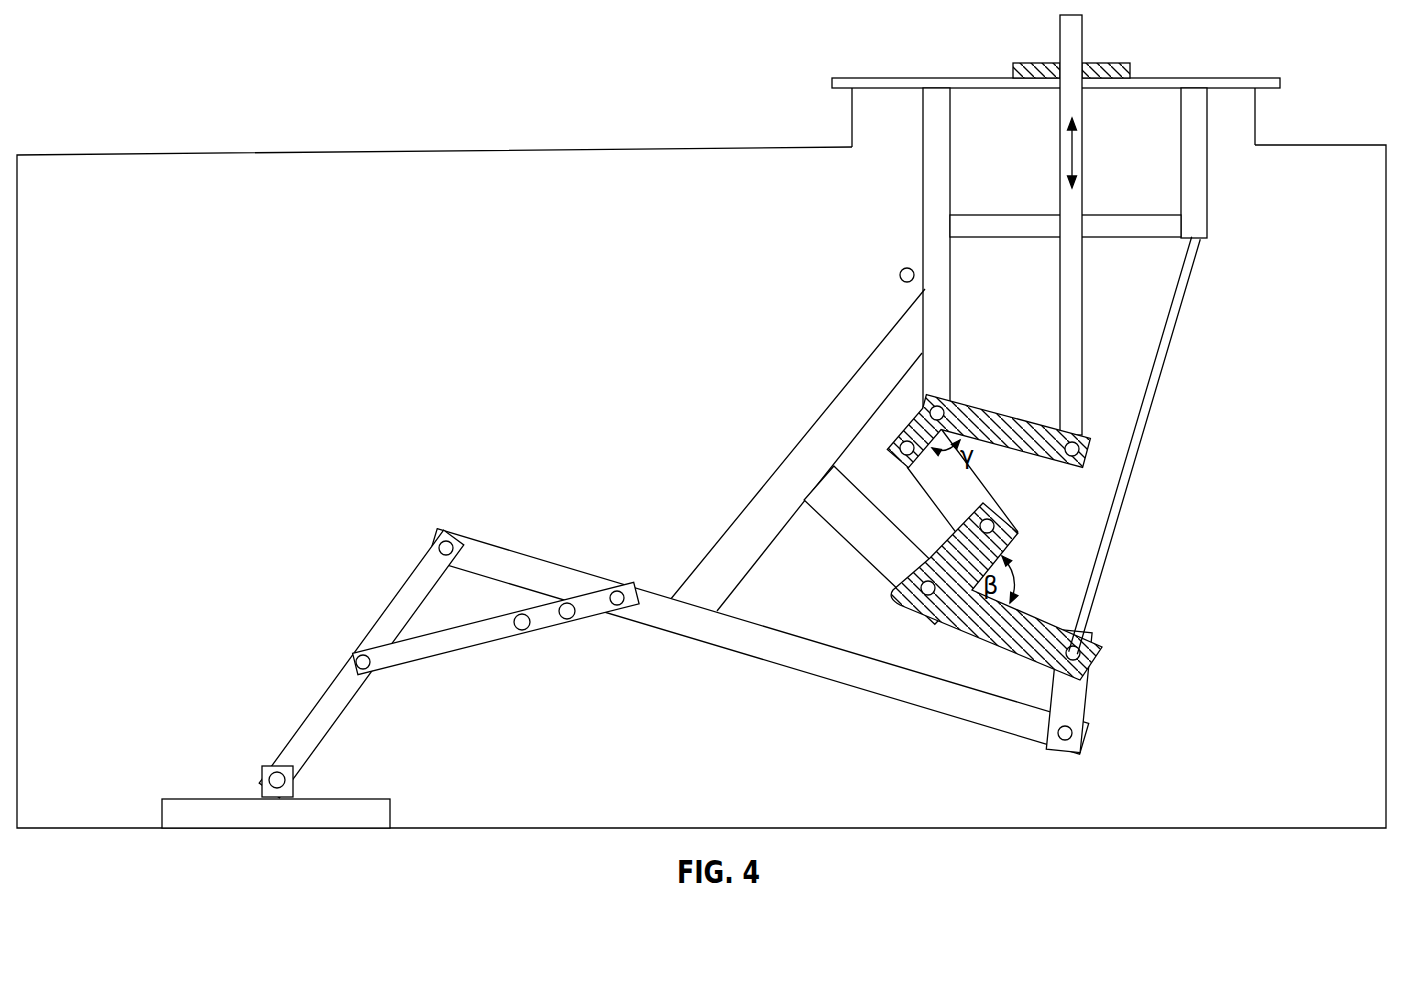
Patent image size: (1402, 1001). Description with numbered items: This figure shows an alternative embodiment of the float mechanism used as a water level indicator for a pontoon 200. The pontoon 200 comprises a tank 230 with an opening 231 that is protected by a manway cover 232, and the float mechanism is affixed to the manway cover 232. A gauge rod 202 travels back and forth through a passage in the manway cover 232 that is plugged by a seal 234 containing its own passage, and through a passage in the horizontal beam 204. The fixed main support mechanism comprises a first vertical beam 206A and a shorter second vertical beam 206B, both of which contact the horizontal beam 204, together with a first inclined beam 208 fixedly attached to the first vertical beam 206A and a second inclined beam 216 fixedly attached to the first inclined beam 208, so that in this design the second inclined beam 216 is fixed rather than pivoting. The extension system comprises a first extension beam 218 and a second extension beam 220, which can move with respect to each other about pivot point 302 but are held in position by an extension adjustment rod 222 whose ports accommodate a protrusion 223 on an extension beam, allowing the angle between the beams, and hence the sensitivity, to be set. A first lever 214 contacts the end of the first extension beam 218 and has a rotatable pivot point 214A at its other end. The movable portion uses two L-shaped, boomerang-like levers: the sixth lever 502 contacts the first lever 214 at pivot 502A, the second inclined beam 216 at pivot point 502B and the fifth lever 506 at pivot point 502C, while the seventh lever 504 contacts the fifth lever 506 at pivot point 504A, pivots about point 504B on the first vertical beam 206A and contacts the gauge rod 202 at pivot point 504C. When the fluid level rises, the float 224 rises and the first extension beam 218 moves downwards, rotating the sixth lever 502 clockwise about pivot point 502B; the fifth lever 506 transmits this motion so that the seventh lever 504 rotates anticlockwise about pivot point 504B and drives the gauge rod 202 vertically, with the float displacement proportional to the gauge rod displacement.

The pontoon 200 is at (228, 78).
The gauge rod 202 is at (1075, 39).
The horizontal beam 204 is at (1012, 222).
The first vertical beam 206A is at (922, 191).
The second vertical beam 206B is at (1193, 202).
The first inclined beam 208 is at (893, 337).
The first lever 214 is at (1080, 703).
The rotatable pivot point 214A is at (1072, 735).
The second inclined beam 216 is at (843, 525).
The first extension beam 218 is at (515, 567).
The second extension beam 220 is at (375, 635).
The extension adjustment rod 222 is at (460, 642).
The protrusion 223 is at (622, 608).
The float 224 is at (382, 815).
The tank 230 is at (322, 152).
The opening 231 is at (873, 95).
The manway cover 232 is at (1237, 82).
The seal 234 is at (1013, 72).
The pivot point 302 is at (443, 540).
The sixth lever 502 is at (967, 623).
The pivot point 502A is at (1085, 652).
The pivot point 502B is at (912, 595).
The pivot point 502C is at (993, 527).
The seventh lever 504 is at (1013, 425).
The pivot point 504A is at (898, 449).
The pivot point 504B is at (925, 408).
The pivot point 504C is at (1078, 446).
The fifth lever 506 is at (948, 495).